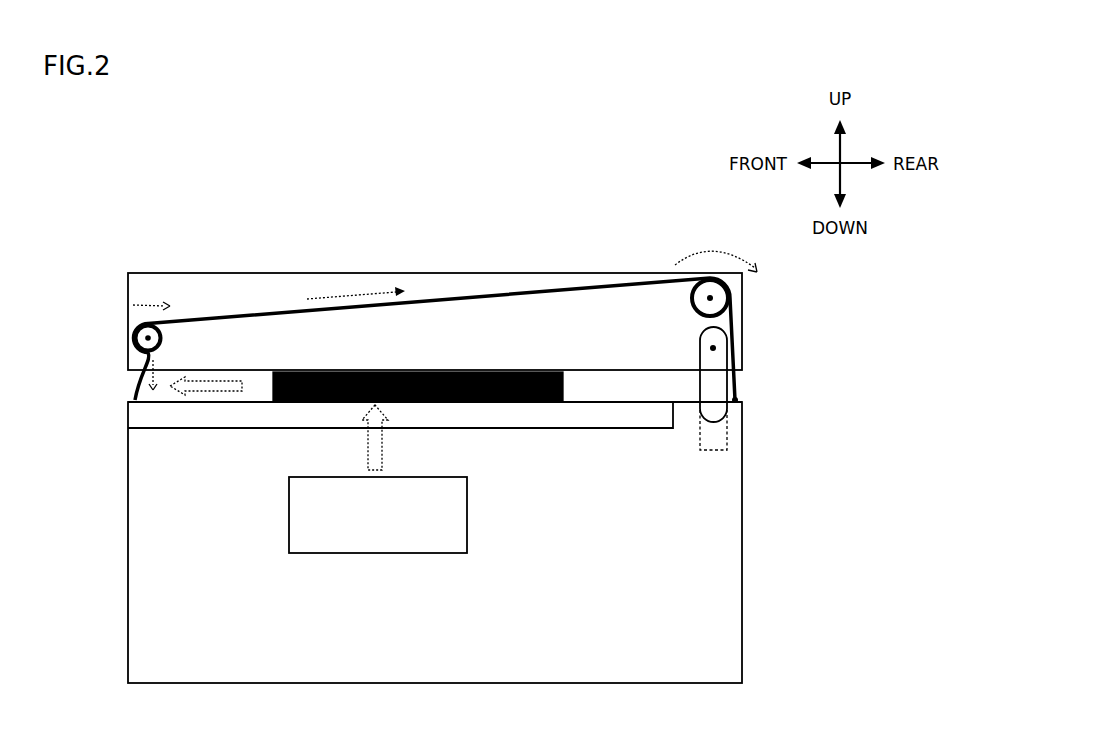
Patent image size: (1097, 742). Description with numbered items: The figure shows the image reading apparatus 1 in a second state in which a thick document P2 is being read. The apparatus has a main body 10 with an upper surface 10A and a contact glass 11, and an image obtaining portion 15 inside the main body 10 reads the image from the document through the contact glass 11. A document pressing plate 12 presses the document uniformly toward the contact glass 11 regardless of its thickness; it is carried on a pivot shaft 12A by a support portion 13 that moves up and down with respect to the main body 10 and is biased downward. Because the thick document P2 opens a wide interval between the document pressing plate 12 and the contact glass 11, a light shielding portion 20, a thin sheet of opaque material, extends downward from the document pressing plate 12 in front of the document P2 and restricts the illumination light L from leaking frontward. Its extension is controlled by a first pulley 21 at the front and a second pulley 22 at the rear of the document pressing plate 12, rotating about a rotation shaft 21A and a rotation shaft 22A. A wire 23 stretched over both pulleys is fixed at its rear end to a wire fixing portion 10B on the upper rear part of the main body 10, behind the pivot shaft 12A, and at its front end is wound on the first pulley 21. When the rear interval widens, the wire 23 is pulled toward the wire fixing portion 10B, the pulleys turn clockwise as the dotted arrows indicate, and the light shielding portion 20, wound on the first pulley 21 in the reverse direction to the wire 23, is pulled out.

The image reading apparatus 1 is at (803, 686).
The main body 10 is at (743, 562).
The upper surface 10A is at (687, 403).
The wire fixing portion 10B is at (745, 404).
The contact glass 11 is at (172, 413).
The document pressing plate 12 is at (321, 273).
The pivot shaft 12A is at (700, 345).
The support portion 13 is at (716, 383).
The image obtaining portion 15 is at (468, 523).
The light shielding portion 20 is at (133, 381).
The first pulley 21 is at (133, 323).
The rotation shaft 21A is at (143, 338).
The second pulley 22 is at (716, 296).
The rotation shaft 22A is at (722, 303).
The wire 23 is at (568, 290).
The thick document P2 is at (505, 370).
The illumination light L is at (388, 432).